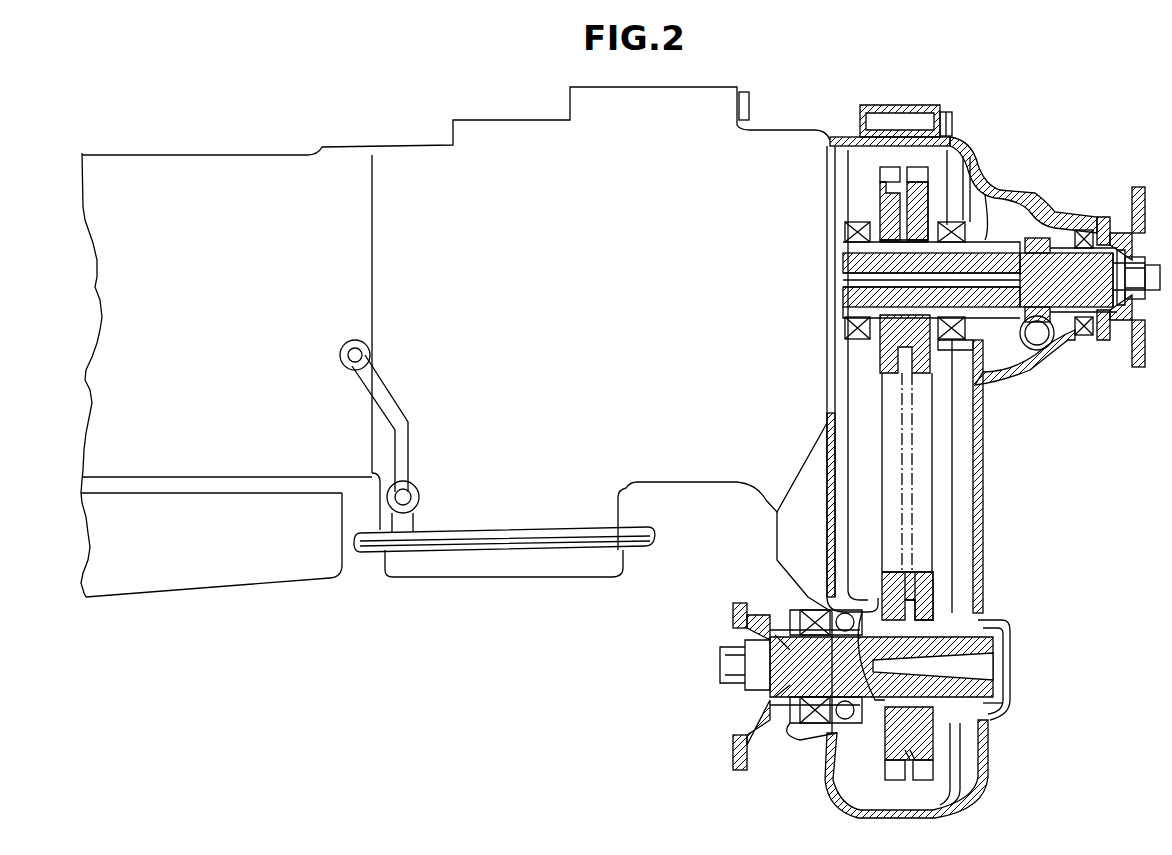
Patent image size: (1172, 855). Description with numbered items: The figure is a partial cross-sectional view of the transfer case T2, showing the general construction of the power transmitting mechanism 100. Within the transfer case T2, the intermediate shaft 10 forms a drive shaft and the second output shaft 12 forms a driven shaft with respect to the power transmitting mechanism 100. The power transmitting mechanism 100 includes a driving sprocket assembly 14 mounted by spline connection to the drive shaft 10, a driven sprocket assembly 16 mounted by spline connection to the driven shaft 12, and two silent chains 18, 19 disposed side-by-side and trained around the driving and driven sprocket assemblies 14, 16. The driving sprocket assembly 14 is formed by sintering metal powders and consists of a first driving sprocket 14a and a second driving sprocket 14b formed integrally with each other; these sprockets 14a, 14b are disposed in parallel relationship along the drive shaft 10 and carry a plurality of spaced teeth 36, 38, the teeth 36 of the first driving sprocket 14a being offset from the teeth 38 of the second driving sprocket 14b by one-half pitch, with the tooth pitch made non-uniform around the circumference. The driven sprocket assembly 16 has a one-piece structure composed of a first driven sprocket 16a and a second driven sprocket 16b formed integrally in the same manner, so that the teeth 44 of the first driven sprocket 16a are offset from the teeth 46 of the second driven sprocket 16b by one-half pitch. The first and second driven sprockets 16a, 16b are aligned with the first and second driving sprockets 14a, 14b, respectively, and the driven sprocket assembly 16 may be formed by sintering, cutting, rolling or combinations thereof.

The intermediate shaft 10 is at (1030, 187).
The second output shaft 12 is at (720, 668).
The driving sprocket assembly 14 is at (893, 355).
The first driving sprocket 14a is at (875, 203).
The second driving sprocket 14b is at (920, 200).
The driven sprocket assembly 16 is at (967, 595).
The first driven sprocket 16a is at (858, 745).
The second driven sprocket 16b is at (933, 753).
The silent chain 18 is at (897, 475).
The silent chain 19 is at (928, 522).
The teeth of the first driving sprocket 36 is at (886, 170).
The teeth of the second driving sprocket 38 is at (918, 170).
The teeth of the first driven sprocket 44 is at (888, 776).
The teeth of the second driven sprocket 46 is at (927, 770).
The power transmitting mechanism 100 is at (1015, 467).
The transfer case T2 is at (791, 92).